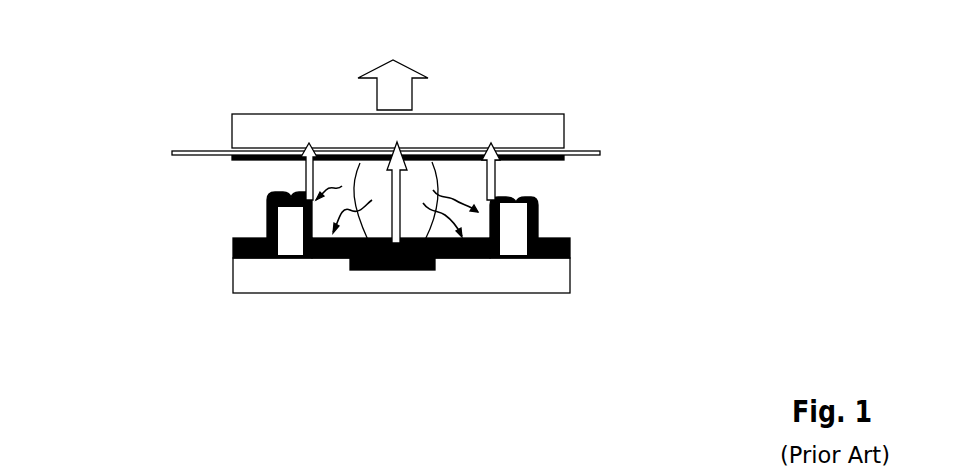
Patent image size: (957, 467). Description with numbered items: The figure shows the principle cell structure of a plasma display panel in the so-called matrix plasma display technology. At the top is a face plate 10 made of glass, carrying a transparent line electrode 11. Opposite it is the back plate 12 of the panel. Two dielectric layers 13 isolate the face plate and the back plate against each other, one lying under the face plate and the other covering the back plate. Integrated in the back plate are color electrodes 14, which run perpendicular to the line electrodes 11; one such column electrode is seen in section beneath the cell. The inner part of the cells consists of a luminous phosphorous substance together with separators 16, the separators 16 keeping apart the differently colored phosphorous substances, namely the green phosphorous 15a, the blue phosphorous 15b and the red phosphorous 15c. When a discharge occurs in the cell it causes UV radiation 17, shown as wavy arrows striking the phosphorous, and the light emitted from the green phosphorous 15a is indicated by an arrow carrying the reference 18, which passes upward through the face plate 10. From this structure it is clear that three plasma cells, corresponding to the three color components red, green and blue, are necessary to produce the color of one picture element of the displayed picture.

The face plate 10 is at (521, 125).
The transparent line electrode 11 is at (598, 152).
The back plate 12 is at (320, 285).
The dielectric layer 13 is at (232, 250).
The color electrode 14 is at (392, 263).
The green phosphorous substance 15a is at (445, 260).
The blue phosphorous substance 15b is at (570, 258).
The red phosphorous substance 15c is at (260, 260).
The separator 16 is at (283, 219).
The UV radiation 17 is at (397, 201).
The emitted light 18 is at (405, 72).